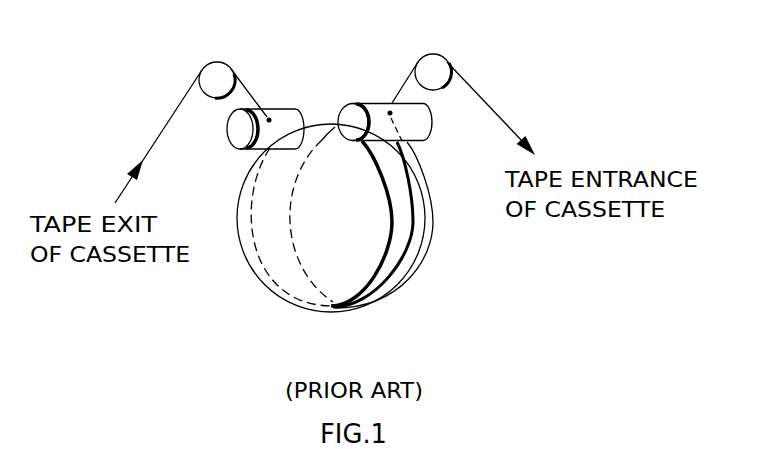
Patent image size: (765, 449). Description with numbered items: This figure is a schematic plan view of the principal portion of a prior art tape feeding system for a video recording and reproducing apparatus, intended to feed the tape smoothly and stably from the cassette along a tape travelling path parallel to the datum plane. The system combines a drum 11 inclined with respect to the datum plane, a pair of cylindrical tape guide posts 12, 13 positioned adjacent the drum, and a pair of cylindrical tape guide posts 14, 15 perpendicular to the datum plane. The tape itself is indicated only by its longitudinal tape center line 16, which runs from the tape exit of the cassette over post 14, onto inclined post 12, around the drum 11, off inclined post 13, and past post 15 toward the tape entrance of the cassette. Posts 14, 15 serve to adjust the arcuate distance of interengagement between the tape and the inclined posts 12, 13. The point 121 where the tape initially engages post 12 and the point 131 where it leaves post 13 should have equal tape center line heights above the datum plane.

The drum 11 is at (298, 302).
The cylindrical tape guide post 12 is at (239, 134).
The point where the tape initially engages the inclined post 121 is at (269, 118).
The cylindrical tape guide post 13 is at (350, 117).
The point where the tape leaves the inclined post 131 is at (390, 111).
The cylindrical tape guide post 14 is at (212, 72).
The cylindrical tape guide post 15 is at (433, 67).
The longitudinal tape center line 16 is at (160, 128).